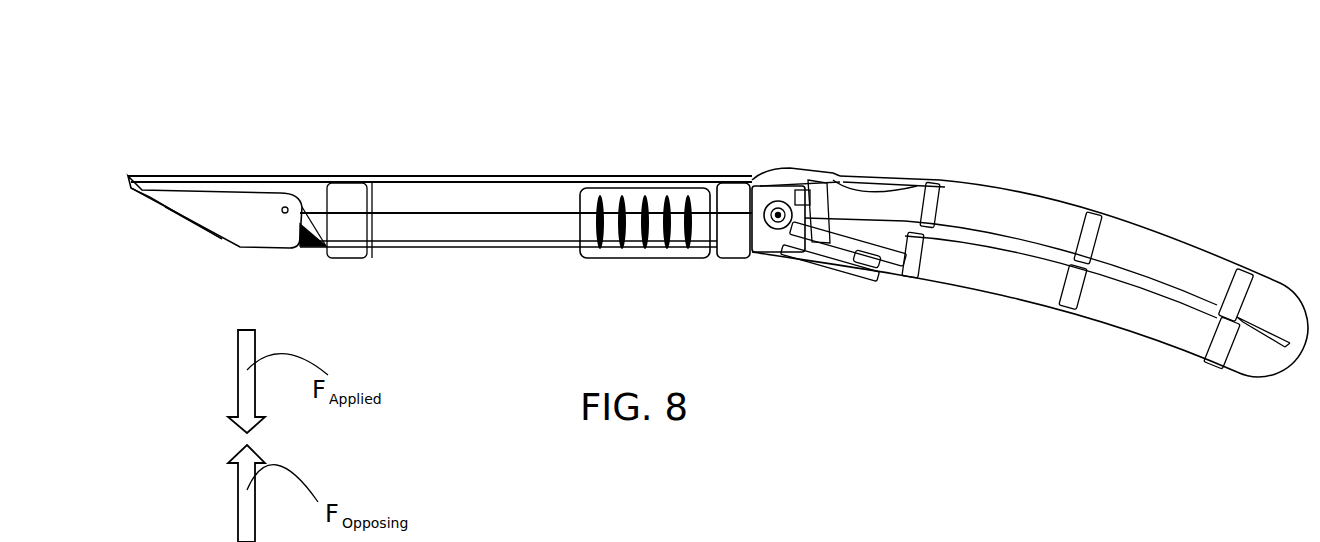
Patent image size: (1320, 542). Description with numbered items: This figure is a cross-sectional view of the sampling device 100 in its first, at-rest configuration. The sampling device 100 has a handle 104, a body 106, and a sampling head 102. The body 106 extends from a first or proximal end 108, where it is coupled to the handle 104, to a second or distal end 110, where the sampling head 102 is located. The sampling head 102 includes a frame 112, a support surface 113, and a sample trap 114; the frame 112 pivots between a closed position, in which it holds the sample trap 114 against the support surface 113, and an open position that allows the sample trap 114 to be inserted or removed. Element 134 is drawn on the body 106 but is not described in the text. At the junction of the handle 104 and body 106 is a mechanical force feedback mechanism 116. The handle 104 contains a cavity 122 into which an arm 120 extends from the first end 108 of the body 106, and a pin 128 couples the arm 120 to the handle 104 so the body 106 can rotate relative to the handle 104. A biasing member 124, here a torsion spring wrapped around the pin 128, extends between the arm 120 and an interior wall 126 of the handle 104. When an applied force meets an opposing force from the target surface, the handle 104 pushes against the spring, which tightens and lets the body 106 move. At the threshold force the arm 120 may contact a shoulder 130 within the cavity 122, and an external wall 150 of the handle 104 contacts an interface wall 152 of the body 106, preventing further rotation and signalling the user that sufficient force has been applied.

The sampling device 100 is at (1095, 120).
The sampling head 102 is at (236, 171).
The handle 104 is at (1163, 243).
The body 106 is at (532, 176).
The first or proximal end 108 is at (742, 178).
The second or distal end 110 is at (187, 177).
The frame 112 is at (265, 208).
The support surface 113 is at (187, 222).
The sample trap 114 is at (167, 212).
The mechanical force feedback mechanism 116 is at (760, 253).
The arm 120 is at (845, 262).
The cavity 122 is at (880, 243).
The biasing member 124 is at (785, 242).
The interior wall 126 is at (833, 267).
The pin 128 is at (760, 182).
The shoulder 130 is at (905, 273).
The top rail 134 is at (428, 176).
The external wall 150 is at (783, 170).
The interface wall 152 is at (757, 177).